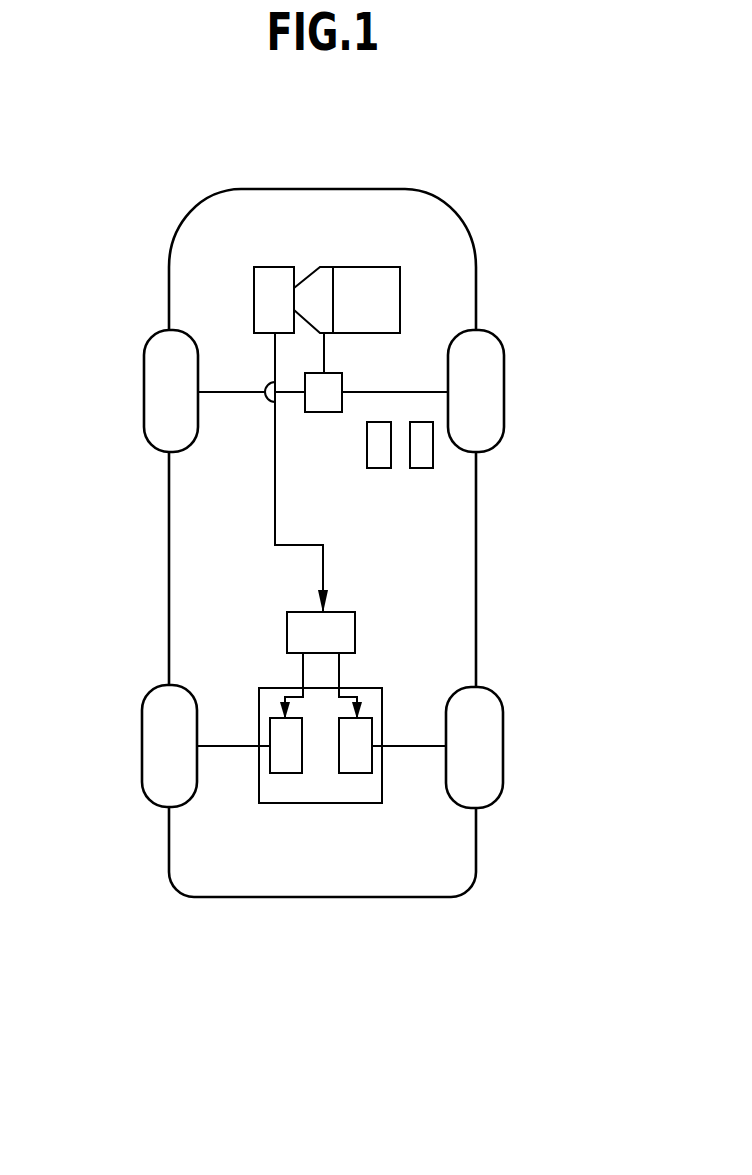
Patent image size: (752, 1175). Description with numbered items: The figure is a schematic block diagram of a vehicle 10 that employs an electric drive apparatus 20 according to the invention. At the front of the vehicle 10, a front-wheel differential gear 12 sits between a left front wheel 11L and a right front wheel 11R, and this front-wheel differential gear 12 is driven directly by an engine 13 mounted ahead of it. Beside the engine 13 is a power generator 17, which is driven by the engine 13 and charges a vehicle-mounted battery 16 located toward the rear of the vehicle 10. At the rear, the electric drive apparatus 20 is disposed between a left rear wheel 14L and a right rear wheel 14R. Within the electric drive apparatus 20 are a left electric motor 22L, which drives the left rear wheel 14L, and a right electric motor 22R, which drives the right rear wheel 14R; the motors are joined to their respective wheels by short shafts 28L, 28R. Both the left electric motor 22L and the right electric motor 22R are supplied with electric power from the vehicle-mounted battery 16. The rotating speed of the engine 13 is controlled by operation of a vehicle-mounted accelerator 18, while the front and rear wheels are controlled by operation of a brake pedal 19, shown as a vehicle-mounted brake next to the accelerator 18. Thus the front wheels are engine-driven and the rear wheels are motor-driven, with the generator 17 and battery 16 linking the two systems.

The vehicle 10 is at (515, 172).
The left front wheel 11L is at (170, 392).
The right front wheel 11R is at (477, 392).
The front-wheel differential gear 12 is at (323, 398).
The engine 13 is at (370, 267).
The left rear wheel 14L is at (167, 745).
The right rear wheel 14R is at (477, 750).
The vehicle-mounted battery 16 is at (350, 632).
The power generator 17 is at (275, 267).
The vehicle-mounted accelerator 18 is at (421, 462).
The brake pedal 19 is at (378, 462).
The electric drive apparatus 20 is at (367, 803).
The left electric motor 22L is at (281, 773).
The right electric motor 22R is at (351, 773).
The left rear axle 28L is at (220, 750).
The right rear axle 28R is at (415, 750).